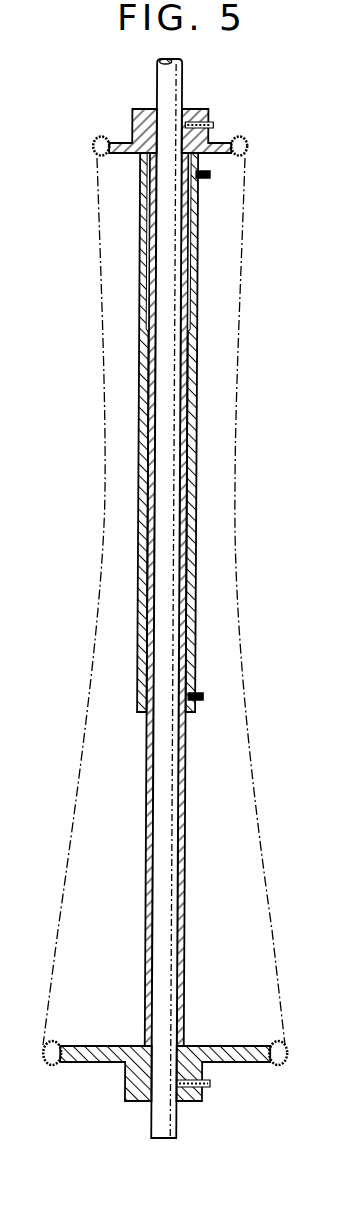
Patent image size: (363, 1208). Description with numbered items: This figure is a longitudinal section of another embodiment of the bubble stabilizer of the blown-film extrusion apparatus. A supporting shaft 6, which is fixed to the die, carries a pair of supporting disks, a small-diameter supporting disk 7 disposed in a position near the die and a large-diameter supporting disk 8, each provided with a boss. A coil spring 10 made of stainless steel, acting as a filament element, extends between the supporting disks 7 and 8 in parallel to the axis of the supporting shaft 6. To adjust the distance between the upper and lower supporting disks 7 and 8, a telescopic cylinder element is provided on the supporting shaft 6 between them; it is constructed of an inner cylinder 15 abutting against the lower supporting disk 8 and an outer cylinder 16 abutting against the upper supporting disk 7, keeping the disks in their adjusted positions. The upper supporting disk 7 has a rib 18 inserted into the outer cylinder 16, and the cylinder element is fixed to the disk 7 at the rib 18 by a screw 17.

The supporting shaft 6 is at (178, 81).
The small-diameter supporting disk 7 is at (128, 142).
The large-diameter supporting disk 8 is at (238, 1052).
The coil spring 10 is at (233, 490).
The inner cylinder 15 is at (183, 810).
The outer cylinder 16 is at (198, 265).
The screw 17 is at (205, 175).
The rib 18 is at (153, 165).